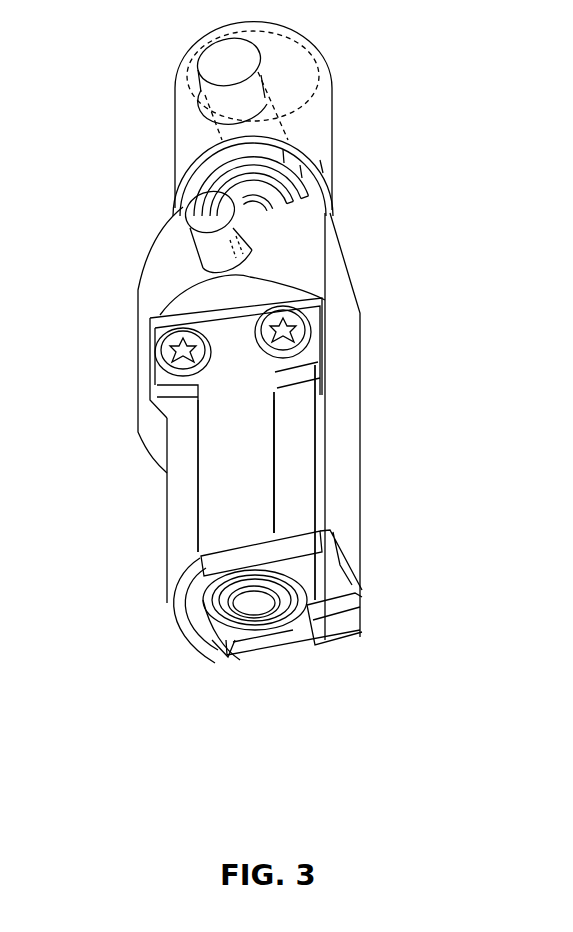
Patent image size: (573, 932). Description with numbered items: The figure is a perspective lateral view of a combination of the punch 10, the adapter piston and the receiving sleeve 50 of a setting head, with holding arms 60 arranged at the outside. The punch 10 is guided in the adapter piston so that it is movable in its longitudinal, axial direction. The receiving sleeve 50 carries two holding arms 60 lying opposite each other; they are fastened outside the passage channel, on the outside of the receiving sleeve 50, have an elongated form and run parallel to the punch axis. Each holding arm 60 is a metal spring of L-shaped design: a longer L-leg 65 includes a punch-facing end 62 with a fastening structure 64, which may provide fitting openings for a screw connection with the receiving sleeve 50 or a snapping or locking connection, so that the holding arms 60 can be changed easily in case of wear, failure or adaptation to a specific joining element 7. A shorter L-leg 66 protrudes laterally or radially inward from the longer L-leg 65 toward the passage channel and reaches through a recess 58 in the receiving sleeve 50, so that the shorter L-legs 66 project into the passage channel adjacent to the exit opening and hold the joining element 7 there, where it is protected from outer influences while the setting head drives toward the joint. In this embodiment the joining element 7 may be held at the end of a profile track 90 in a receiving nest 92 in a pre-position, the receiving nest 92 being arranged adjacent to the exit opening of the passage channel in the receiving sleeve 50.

The punch 10 is at (333, 100).
The receiving sleeve 50 is at (148, 393).
The punch-facing end 62 is at (237, 350).
The fastening structure 64 is at (307, 340).
The holding arms 60 is at (260, 460).
The longer L-leg 65 is at (232, 462).
The recess 58 is at (273, 548).
The shorter L-leg 66 is at (200, 557).
The joining element 7 is at (258, 608).
The profile track 90 is at (330, 577).
The receiving nest 92 is at (227, 632).